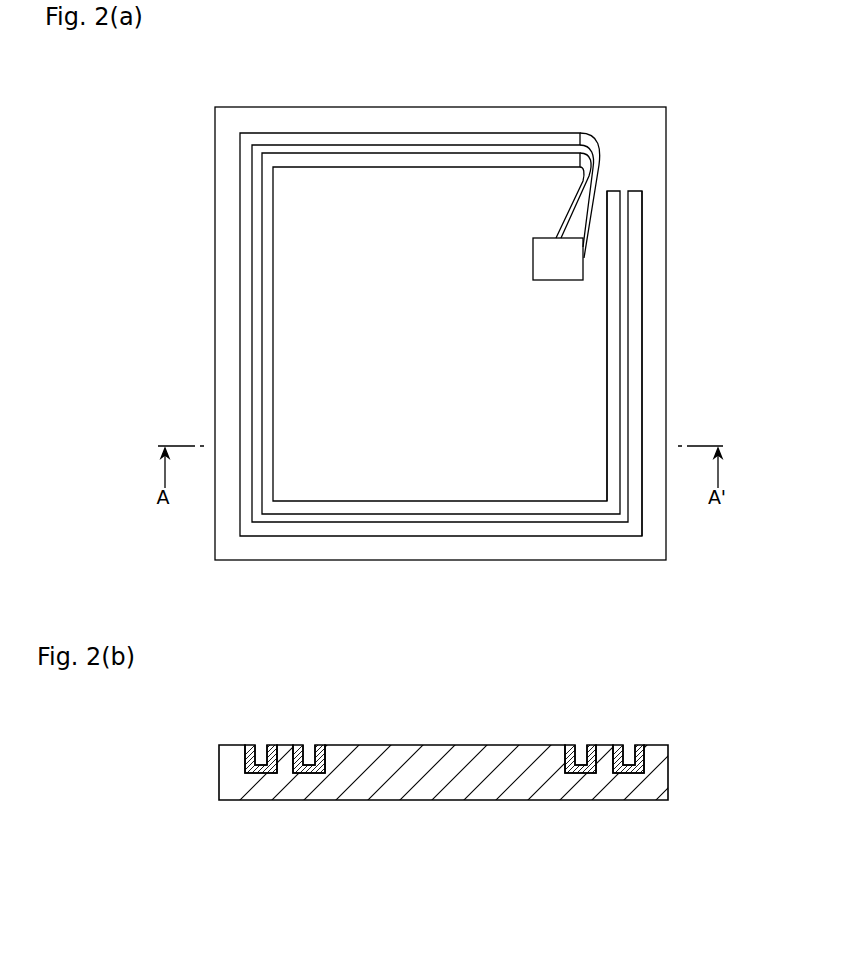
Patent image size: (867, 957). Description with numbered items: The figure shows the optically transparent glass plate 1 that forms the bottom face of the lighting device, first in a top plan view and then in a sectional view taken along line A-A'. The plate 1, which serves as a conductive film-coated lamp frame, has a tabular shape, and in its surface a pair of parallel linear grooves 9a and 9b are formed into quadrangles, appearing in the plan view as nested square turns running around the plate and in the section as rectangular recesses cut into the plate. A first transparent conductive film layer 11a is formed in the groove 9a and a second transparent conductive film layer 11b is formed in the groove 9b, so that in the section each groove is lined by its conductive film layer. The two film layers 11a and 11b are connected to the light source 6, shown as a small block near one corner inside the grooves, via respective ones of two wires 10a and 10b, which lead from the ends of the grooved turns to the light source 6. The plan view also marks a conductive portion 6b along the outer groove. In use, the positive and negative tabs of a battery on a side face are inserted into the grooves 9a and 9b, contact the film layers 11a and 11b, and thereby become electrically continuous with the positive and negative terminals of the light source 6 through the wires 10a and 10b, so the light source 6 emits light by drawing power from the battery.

In FIG. 2A, the optically transparent glass plate 1 is at (466, 107).
In FIG. 2B, the optically transparent glass plate 1 is at (470, 745).
In FIG. 2A, the light source 6 is at (557, 280).
In FIG. 2A, the antenna conductor 6b is at (636, 348).
In FIG. 2A, the groove 9a is at (615, 347).
In FIG. 2B, the groove 9a is at (309, 758).
In FIG. 2B, the groove 9b is at (261, 758).
In FIG. 2A, the wire 10a is at (574, 207).
In FIG. 2A, the wire 10b is at (601, 160).
In FIG. 2A, the first transparent conductive film layer 11a is at (607, 378).
In FIG. 2B, the first transparent conductive film layer 11a is at (300, 745).
In FIG. 2A, the second transparent conductive film layer 11b is at (643, 385).
In FIG. 2B, the second transparent conductive film layer 11b is at (252, 745).